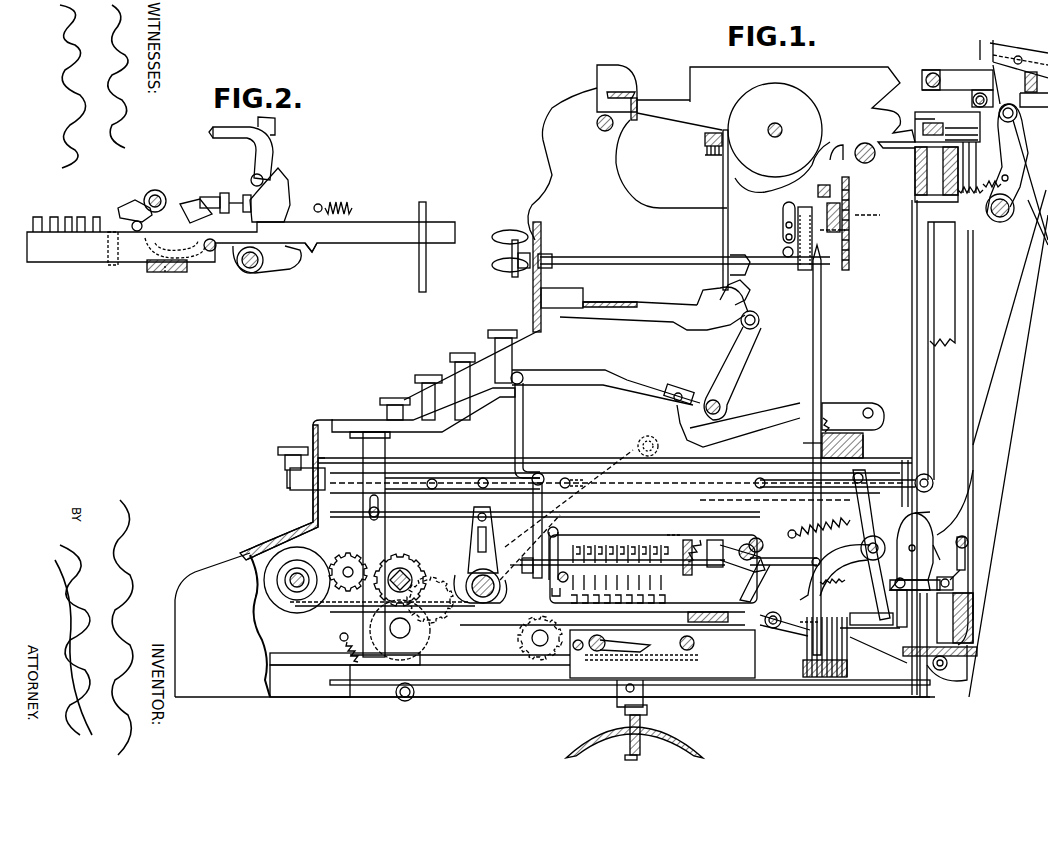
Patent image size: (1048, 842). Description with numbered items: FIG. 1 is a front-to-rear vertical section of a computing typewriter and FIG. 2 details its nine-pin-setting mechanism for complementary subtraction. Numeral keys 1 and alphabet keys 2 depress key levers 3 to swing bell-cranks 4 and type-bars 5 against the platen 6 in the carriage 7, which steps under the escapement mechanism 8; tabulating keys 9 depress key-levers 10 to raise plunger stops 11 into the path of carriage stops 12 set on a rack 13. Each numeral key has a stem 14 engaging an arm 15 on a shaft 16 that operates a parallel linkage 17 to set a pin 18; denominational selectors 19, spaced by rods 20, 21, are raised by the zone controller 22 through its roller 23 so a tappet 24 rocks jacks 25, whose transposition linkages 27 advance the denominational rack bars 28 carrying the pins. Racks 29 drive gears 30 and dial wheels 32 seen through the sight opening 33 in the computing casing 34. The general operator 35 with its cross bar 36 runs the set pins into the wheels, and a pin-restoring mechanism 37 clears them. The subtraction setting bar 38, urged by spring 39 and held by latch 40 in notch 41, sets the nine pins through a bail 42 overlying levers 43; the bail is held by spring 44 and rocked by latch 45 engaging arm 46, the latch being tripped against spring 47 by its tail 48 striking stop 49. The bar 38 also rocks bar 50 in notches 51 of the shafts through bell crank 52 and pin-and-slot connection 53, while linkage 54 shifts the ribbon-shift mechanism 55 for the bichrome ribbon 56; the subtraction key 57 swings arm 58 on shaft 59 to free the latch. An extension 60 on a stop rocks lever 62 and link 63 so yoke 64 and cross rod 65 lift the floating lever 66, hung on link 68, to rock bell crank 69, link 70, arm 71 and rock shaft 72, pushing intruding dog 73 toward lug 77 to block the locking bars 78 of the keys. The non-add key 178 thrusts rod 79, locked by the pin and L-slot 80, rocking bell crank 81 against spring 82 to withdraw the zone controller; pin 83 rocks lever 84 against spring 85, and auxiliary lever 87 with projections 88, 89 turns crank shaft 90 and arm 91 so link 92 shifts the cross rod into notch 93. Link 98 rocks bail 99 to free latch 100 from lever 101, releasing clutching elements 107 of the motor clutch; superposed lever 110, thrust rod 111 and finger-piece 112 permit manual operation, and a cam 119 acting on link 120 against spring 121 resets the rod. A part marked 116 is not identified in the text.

In FIG. 1, the numeral keys 1 is at (505, 331).
In FIG. 1, the alphabet keys 2 is at (450, 358).
In FIG. 1, the key levers 3 is at (572, 386).
In FIG. 1, the bell-cranks 4 is at (752, 348).
In FIG. 1, the type-bars 5 is at (624, 305).
In FIG. 1, the platen 6 is at (779, 137).
In FIG. 1, the carriage 7 is at (721, 152).
In FIG. 1, the escapement mechanism 8 is at (848, 220).
In FIG. 1, the tabulating keys 9 is at (290, 447).
In FIG. 1, the key-levers 10 is at (285, 465).
In FIG. 1, the plunger stops 11 is at (936, 174).
In FIG. 1, the carriage-carried stops 12 is at (932, 113).
In FIG. 1, the rack 13 is at (923, 128).
In FIG. 1, the dependent stem 14 is at (523, 424).
In FIG. 1, the arm 15 is at (517, 560).
In FIG. 1, the shafts 16 is at (680, 560).
In FIG. 1, the parallel linkage 17 is at (607, 545).
In FIG. 2, the nest of pins 18 is at (70, 217).
In FIG. 1, the denominational selectors 19 is at (957, 78).
In FIG. 1, the rod 20 is at (930, 72).
In FIG. 1, the rod 21 is at (978, 88).
In FIG. 1, the zone controller 22 is at (1027, 180).
In FIG. 1, the roller 23 is at (1005, 158).
In FIG. 1, the tappet 24 is at (1021, 89).
In FIG. 1, the jacks 25 is at (1006, 58).
In FIG. 1, the transposition linkages 27 is at (935, 678).
In FIG. 1, the denominational rack bars 28 is at (537, 606).
In FIG. 1, the racks 29 is at (325, 608).
In FIG. 1, the gears 30 is at (340, 565).
In FIG. 1, the dial wheels 32 is at (278, 604).
In FIG. 1, the sight opening 33 is at (272, 546).
In FIG. 1, the computing casing 34 is at (555, 616).
In FIG. 1, the general operator 35 is at (490, 660).
In FIG. 2, the cross bar 36 is at (160, 272).
In FIG. 1, the cross bar 36 is at (712, 624).
In FIG. 1, the pin-restoring mechanism 37 is at (662, 654).
In FIG. 2, the subtraction setting bar 38 is at (80, 262).
In FIG. 1, the subtraction setting bar 38 is at (517, 638).
In FIG. 2, the spring 39 is at (352, 206).
In FIG. 1, the spring 39 is at (811, 630).
In FIG. 2, the latch 40 is at (278, 270).
In FIG. 1, the latch 40 is at (785, 626).
In FIG. 2, the notch 41 is at (313, 252).
In FIG. 2, the bail 42 is at (130, 205).
In FIG. 2, the levers 43 is at (118, 236).
In FIG. 2, the spring 44 is at (157, 190).
In FIG. 2, the latch 45 is at (172, 272).
In FIG. 2, the arm 46 is at (178, 212).
In FIG. 2, the spring 47 is at (208, 252).
In FIG. 2, the tail 48 is at (202, 197).
In FIG. 2, the stop 49 is at (226, 193).
In FIG. 1, the bar 50 is at (700, 540).
In FIG. 1, the notches 51 is at (712, 567).
In FIG. 1, the bell crank 52 is at (742, 558).
In FIG. 1, the pin-and-slot connection 53 is at (744, 581).
In FIG. 1, the linkage 54 is at (821, 372).
In FIG. 1, the ribbon-shift mechanism 55 is at (783, 230).
In FIG. 1, the bichrome ribbon 56 is at (707, 150).
In FIG. 1, the subtraction key 57 is at (307, 487).
In FIG. 2, the arm 58 is at (276, 132).
In FIG. 1, the arm 58 is at (775, 498).
In FIG. 2, the shaft 59 is at (250, 273).
In FIG. 1, the shaft 59 is at (803, 655).
In FIG. 1, the extension 60 is at (960, 160).
In FIG. 1, the lever 62 is at (985, 178).
In FIG. 1, the link 63 is at (975, 310).
In FIG. 1, the yoke 64 is at (968, 548).
In FIG. 1, the cross rod 65 is at (953, 618).
In FIG. 1, the floating lever 66 is at (909, 608).
In FIG. 1, the link 68 is at (835, 572).
In FIG. 2, the bell crank 69 is at (289, 190).
In FIG. 1, the bell crank 69 is at (765, 566).
In FIG. 2, the link 70 is at (213, 133).
In FIG. 1, the link 70 is at (671, 523).
In FIG. 1, the arm 71 is at (556, 547).
In FIG. 1, the rock shaft 72 is at (558, 596).
In FIG. 1, the intruding dog 73 is at (556, 578).
In FIG. 1, the second fixed lug 77 is at (630, 672).
In FIG. 1, the locking bars 78 is at (542, 500).
In FIG. 1, the rod 79 is at (545, 503).
In FIG. 1, the pin and L-slot arrangement 80 is at (568, 478).
In FIG. 1, the bell crank 81 is at (912, 319).
In FIG. 1, the spring 82 is at (1014, 205).
In FIG. 1, the pin 83 is at (856, 495).
In FIG. 1, the lever 84 is at (865, 480).
In FIG. 1, the spring 85 is at (819, 525).
In FIG. 1, the auxiliary lever 87 is at (925, 525).
In FIG. 1, the projection 88 is at (910, 550).
In FIG. 1, the projection 89 is at (913, 542).
In FIG. 1, the crank shaft 90 is at (918, 513).
In FIG. 1, the arm 91 is at (910, 570).
In FIG. 1, the link 92 is at (923, 589).
In FIG. 1, the notch 93 is at (955, 582).
In FIG. 1, the link 98 is at (952, 345).
In FIG. 1, the bail 99 is at (975, 650).
In FIG. 1, the latch 100 is at (625, 712).
In FIG. 1, the lever 101 is at (873, 629).
In FIG. 1, the clutching elements 107 is at (648, 757).
In FIG. 1, the superposed lever 110 is at (525, 697).
In FIG. 1, the thrust rod 111 is at (385, 537).
In FIG. 1, the finger-piece 112 is at (380, 402).
In FIG. 1, the foot 116 is at (627, 750).
In FIG. 1, the cam 119 is at (411, 618).
In FIG. 1, the link 120 is at (617, 489).
In FIG. 1, the spring 121 is at (472, 541).
In FIG. 1, the non-add key 178 is at (287, 480).